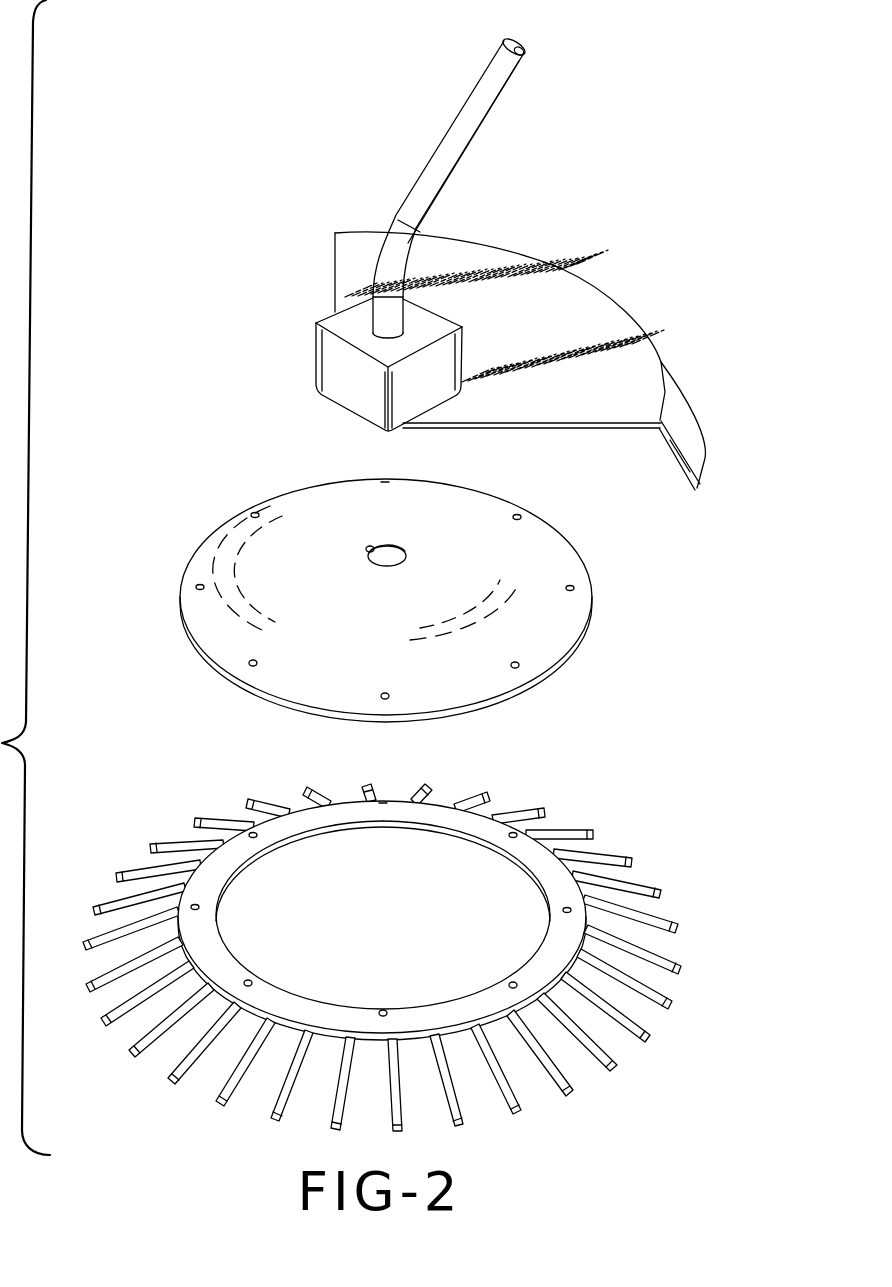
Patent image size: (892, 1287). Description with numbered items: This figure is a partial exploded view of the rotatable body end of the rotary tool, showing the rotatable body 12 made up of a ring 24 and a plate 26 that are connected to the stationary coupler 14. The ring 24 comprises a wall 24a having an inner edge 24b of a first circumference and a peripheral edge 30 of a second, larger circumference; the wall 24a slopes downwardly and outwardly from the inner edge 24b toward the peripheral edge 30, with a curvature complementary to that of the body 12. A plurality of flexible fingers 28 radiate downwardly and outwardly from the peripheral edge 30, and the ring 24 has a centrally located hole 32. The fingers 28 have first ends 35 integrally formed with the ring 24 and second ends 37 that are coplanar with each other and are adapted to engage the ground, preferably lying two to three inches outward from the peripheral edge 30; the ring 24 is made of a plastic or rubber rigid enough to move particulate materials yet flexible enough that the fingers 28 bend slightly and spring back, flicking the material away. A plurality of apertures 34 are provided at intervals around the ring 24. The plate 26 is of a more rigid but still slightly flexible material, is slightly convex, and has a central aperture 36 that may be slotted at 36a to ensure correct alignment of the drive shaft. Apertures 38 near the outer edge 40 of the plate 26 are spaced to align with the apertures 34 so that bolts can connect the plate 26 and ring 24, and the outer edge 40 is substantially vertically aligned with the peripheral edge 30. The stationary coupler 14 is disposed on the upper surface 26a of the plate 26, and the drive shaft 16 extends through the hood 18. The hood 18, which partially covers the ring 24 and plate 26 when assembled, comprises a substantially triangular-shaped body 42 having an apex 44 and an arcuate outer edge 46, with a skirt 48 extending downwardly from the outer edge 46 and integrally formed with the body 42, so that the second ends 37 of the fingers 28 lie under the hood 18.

The rotatable body 12 is at (255, 478).
The stationary coupler 14 is at (314, 353).
The drive shaft 16 is at (448, 127).
The hood 18 is at (501, 246).
The ring 24 is at (618, 820).
The wall 24a is at (550, 947).
The inner edge 24b is at (227, 942).
The plate 26 is at (590, 547).
The upper surface 26a is at (232, 550).
The flexible fingers 28 is at (658, 892).
The peripheral edge 30 is at (330, 1027).
The hole 32 is at (340, 820).
The apertures 34 is at (517, 828).
The first ends 35 is at (595, 895).
The central aperture 36 is at (397, 548).
The slot 36a is at (370, 550).
The second ends 37 is at (683, 936).
The apertures 38 is at (520, 517).
The outer edge 40 is at (452, 718).
The body 42 is at (566, 298).
The apex 44 is at (437, 417).
The arcuate outer edge 46 is at (663, 392).
The skirt 48 is at (684, 428).